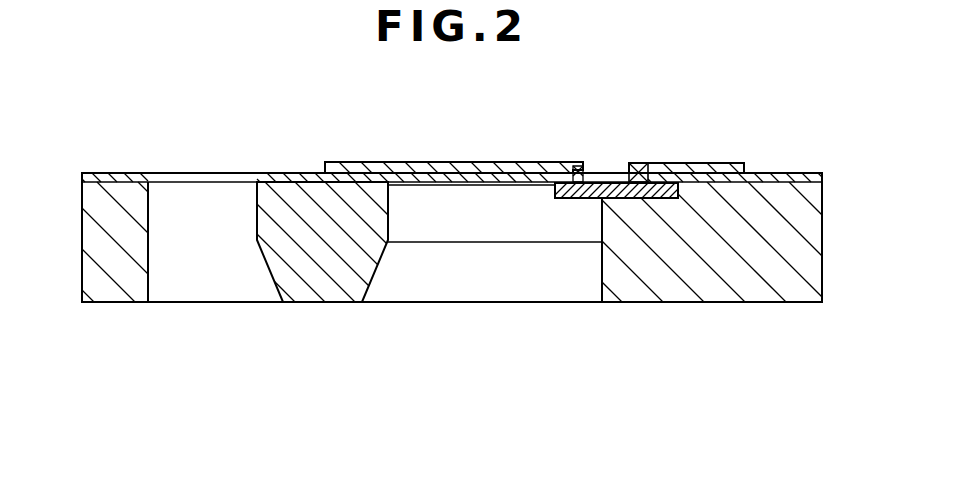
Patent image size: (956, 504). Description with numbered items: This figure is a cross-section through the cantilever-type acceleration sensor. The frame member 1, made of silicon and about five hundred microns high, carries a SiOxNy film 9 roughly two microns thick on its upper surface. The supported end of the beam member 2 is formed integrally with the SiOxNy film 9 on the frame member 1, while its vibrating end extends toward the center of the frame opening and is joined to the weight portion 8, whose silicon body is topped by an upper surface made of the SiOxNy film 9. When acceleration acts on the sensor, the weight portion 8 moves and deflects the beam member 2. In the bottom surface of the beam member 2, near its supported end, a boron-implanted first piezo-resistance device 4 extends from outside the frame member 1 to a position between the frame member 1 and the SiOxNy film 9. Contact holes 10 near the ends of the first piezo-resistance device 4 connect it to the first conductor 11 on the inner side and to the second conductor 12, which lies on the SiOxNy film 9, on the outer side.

The frame member 1 is at (100, 248).
The beam member 2 is at (500, 227).
The first piezo-resistance device 4 is at (603, 180).
The weight portion 8 is at (283, 178).
The SiOxNy film 9 is at (126, 173).
The contact hole 10 is at (574, 167).
The first conductor 11 is at (410, 172).
The second conductor 12 is at (728, 168).